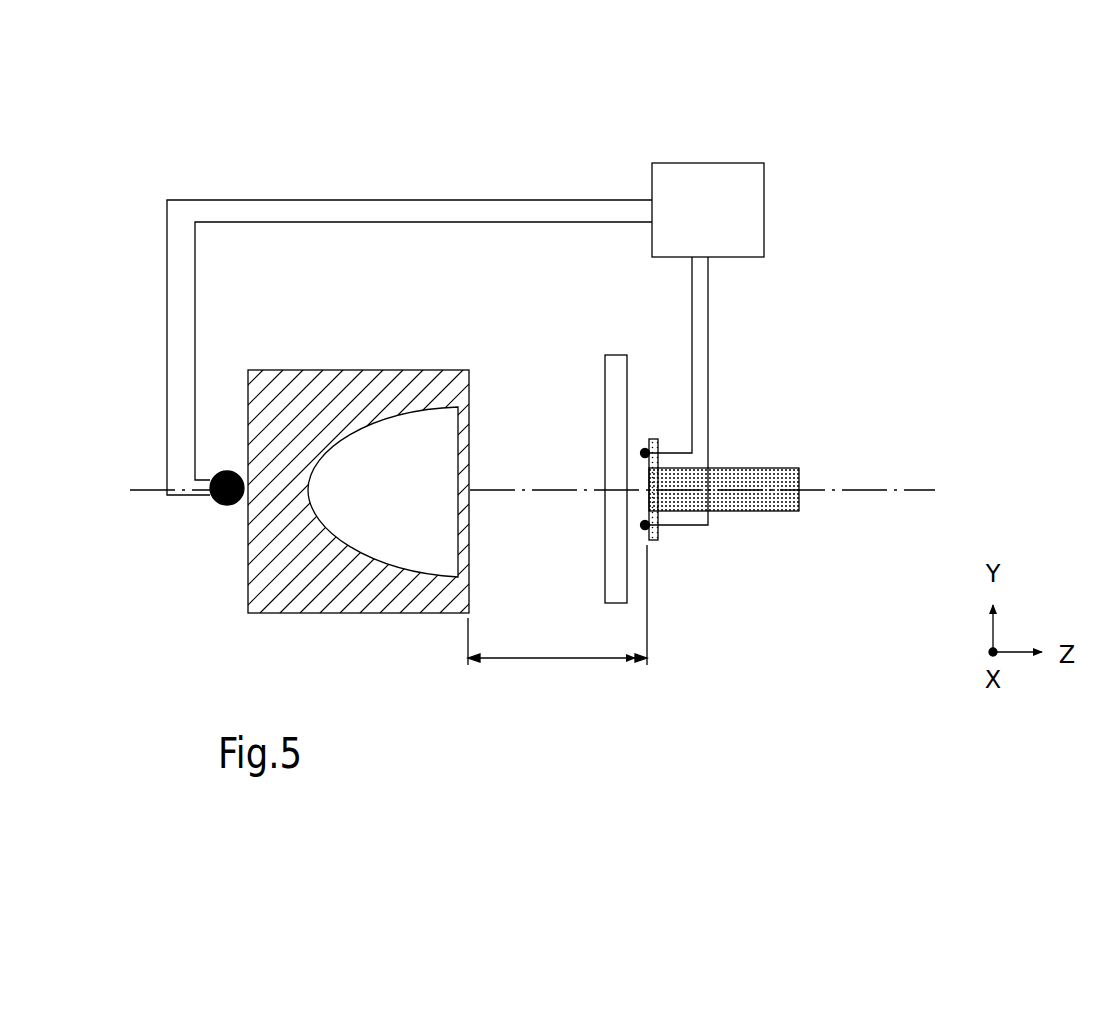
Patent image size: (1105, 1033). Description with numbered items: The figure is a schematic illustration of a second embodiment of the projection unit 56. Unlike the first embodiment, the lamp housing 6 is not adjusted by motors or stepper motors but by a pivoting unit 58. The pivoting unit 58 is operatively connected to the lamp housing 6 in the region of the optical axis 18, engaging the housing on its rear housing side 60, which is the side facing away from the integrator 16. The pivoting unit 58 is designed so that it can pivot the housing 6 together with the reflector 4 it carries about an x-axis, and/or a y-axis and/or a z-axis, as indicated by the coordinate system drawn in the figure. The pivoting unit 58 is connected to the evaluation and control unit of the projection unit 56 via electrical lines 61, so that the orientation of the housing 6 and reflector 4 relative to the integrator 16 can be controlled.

The reflector 4 is at (397, 543).
The lamp housing 6 is at (363, 380).
The integrator 16 is at (753, 510).
The optical axis 18 is at (852, 490).
The projection unit 56 is at (702, 80).
The pivoting unit 58 is at (198, 545).
The rear housing side 60 is at (248, 408).
The electrical lines 61 is at (437, 200).